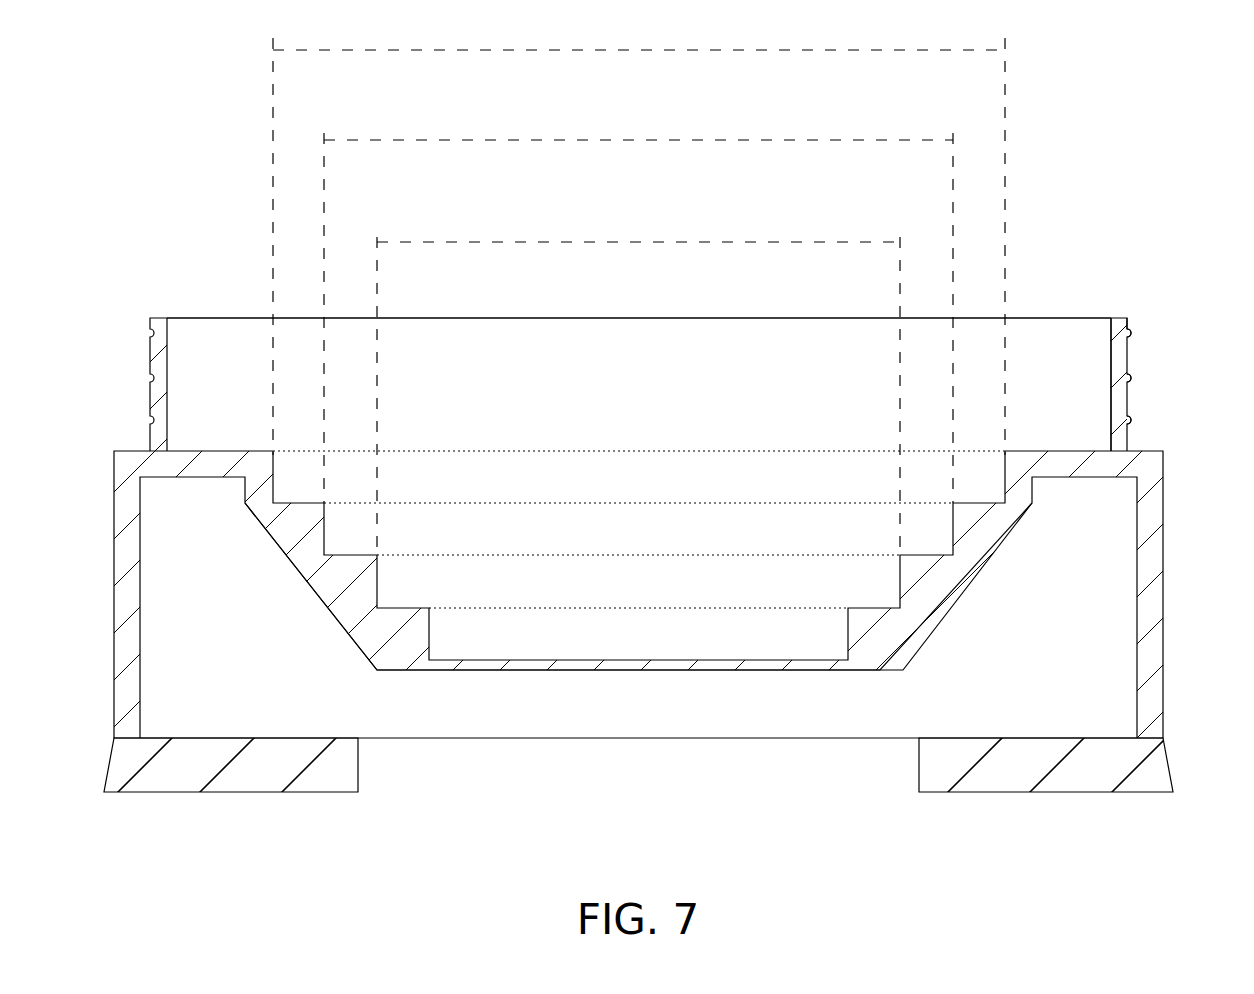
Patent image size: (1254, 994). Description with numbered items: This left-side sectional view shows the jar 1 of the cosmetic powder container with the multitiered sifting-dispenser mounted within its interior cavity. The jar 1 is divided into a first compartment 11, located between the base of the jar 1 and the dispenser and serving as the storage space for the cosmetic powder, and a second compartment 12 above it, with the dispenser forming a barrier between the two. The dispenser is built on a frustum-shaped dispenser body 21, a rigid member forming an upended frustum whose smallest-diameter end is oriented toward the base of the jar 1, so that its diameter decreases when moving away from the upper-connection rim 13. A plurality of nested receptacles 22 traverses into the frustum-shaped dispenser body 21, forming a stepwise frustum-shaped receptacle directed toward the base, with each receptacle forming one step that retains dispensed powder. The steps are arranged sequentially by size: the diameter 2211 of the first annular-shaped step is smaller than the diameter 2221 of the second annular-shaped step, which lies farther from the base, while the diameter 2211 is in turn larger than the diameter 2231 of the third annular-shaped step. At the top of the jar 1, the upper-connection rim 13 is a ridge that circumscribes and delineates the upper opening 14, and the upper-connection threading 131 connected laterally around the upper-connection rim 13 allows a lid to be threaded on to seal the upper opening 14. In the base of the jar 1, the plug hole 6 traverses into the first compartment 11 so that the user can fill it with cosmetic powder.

The jar 1 is at (1160, 643).
The plug hole 6 is at (575, 778).
The first compartment 11 is at (207, 565).
The second compartment 12 is at (209, 406).
The upper-connection rim 13 is at (1123, 340).
The upper-connection threading 131 is at (1125, 396).
The upper opening 14 is at (237, 290).
The frustum-shaped dispenser body 21 is at (1000, 528).
The plurality of nested receptacles 22 is at (640, 440).
The diameter of the second annular-shaped step 2221 is at (639, 235).
The diameter of the first annular-shaped step 2211 is at (638, 304).
The diameter of the third annular-shaped step 2231 is at (638, 375).